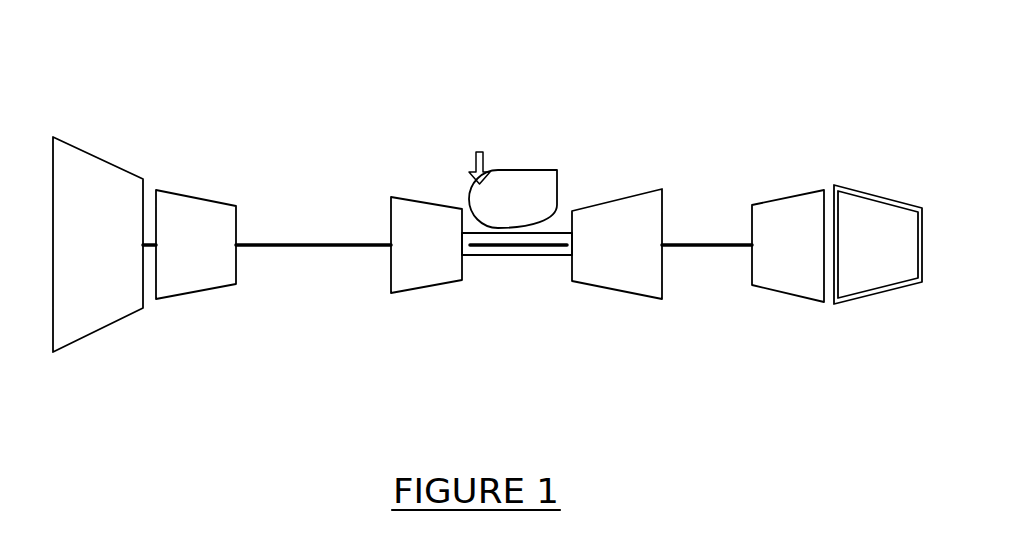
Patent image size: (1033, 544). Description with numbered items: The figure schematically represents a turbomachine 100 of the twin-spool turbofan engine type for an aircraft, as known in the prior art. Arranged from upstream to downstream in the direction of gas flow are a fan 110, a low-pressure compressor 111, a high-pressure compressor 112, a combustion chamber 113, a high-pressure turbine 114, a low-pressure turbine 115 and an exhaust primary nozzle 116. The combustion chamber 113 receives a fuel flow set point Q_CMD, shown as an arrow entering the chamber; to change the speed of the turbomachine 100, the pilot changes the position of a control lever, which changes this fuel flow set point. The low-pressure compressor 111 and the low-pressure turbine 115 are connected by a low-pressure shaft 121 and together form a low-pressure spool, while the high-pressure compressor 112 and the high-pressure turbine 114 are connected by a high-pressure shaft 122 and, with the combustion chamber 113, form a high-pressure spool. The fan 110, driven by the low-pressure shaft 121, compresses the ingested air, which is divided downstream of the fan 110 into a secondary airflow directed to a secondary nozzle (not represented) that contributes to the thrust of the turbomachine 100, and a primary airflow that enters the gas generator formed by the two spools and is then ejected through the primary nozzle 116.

The turbomachine 100 is at (307, 137).
The fan 110 is at (100, 159).
The low-pressure compressor 111 is at (187, 195).
The high-pressure compressor 112 is at (402, 197).
The combustion chamber 113 is at (515, 170).
The high-pressure turbine 114 is at (637, 195).
The low-pressure turbine 115 is at (793, 195).
The exhaust primary nozzle 116 is at (876, 193).
The low-pressure shaft 121 is at (340, 247).
The high-pressure shaft 122 is at (533, 257).